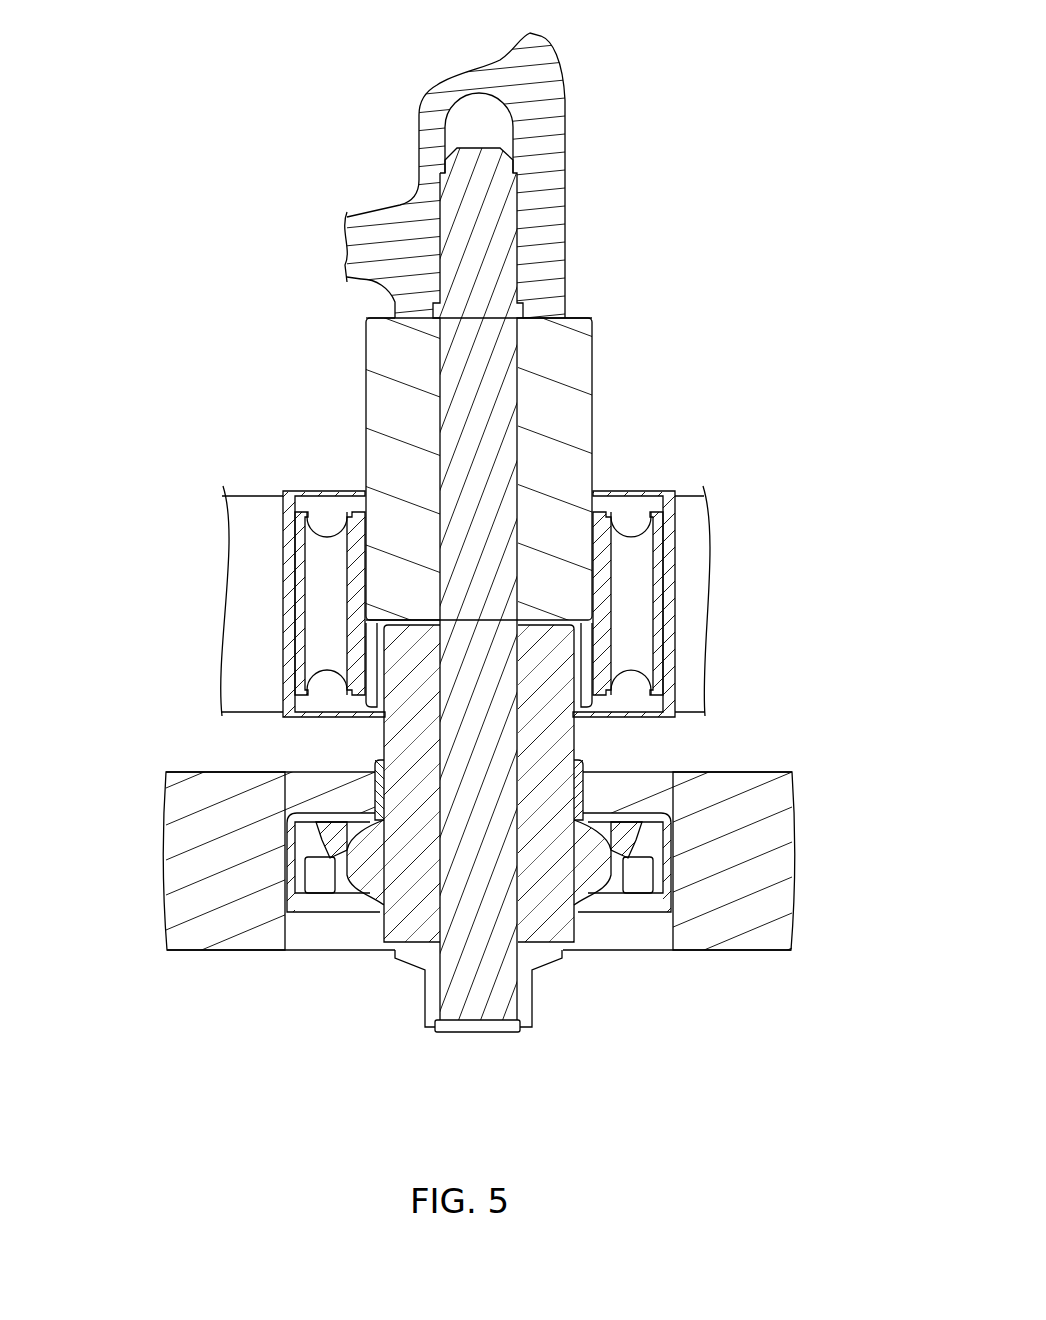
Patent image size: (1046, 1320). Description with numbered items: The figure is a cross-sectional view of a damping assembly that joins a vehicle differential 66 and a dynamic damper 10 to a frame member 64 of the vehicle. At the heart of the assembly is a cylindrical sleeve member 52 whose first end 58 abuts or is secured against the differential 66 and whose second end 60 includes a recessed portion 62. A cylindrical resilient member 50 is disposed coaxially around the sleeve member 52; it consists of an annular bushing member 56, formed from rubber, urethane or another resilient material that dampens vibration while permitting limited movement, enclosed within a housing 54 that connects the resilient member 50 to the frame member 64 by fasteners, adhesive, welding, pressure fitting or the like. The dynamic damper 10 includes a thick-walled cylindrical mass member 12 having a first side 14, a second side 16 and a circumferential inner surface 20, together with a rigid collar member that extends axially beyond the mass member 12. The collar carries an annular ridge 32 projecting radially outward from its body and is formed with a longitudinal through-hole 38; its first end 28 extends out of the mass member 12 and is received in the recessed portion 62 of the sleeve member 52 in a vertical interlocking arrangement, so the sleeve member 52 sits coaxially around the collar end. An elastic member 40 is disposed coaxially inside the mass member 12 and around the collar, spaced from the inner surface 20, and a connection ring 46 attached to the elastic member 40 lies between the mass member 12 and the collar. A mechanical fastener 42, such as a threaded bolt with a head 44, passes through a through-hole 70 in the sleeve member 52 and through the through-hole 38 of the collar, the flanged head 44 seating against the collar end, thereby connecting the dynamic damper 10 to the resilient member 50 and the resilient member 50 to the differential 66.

The dynamic damper 10 is at (132, 832).
The cylindrical mass member 12 is at (182, 937).
The first side 14 is at (178, 772).
The second side 16 is at (203, 952).
The circumferential inner surface 20 is at (298, 952).
The first end 28 is at (545, 742).
The annular ridge 32 is at (597, 867).
The through-hole 38 is at (406, 930).
The elastic member 40 is at (285, 800).
The mechanical fastener 42 is at (495, 288).
The head 44 is at (515, 1005).
The connection ring 46 is at (287, 882).
The cylindrical resilient member 50 is at (668, 493).
The cylindrical sleeve member 52 is at (570, 397).
The housing 54 is at (624, 492).
The annular bushing member 56 is at (640, 622).
The first end 58 is at (382, 314).
The second end 60 is at (373, 698).
The recessed portion 62 is at (410, 618).
The frame member 64 is at (696, 532).
The vehicle differential 66 is at (533, 75).
The through-hole 70 is at (520, 360).